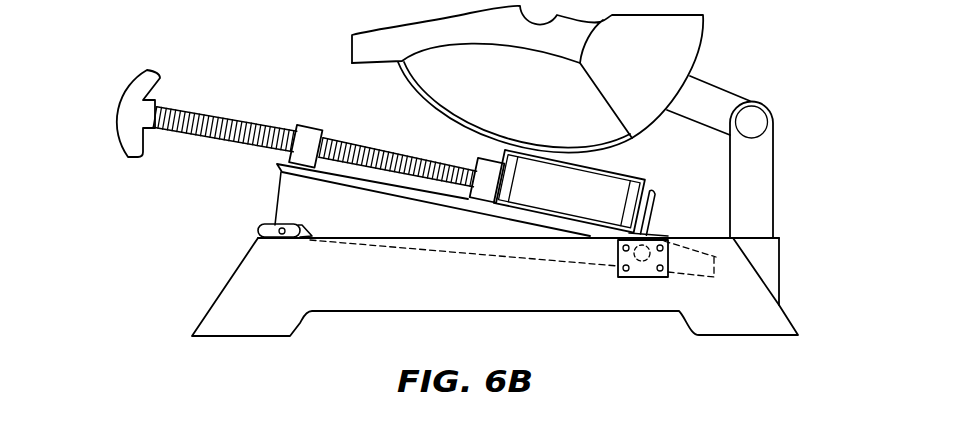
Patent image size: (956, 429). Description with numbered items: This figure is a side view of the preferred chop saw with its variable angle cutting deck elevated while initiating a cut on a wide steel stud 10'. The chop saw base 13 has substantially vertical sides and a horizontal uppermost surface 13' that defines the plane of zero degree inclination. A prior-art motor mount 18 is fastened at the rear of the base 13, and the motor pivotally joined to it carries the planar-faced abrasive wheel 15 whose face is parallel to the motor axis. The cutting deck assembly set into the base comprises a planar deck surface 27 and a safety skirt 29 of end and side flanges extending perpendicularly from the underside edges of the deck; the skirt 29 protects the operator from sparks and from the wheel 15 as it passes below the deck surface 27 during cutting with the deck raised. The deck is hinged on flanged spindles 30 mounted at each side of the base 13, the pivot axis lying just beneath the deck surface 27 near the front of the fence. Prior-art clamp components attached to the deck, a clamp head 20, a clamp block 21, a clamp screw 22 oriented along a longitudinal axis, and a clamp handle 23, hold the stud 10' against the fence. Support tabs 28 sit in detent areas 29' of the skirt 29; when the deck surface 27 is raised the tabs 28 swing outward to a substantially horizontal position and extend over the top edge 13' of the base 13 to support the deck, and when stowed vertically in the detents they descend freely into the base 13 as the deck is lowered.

The wider stud 10' is at (749, 124).
The chop saw base 13 is at (455, 287).
The uppermost surface 13' is at (518, 304).
The wheel 15 is at (453, 79).
The motor mount 18 is at (764, 197).
The clamp head 20 is at (487, 195).
The clamp block 21 is at (295, 124).
The clamp screw 22 is at (187, 111).
The clamp handle 23 is at (117, 112).
The deck surface 27 is at (390, 187).
The support tab 28 is at (256, 228).
The safety skirt 29 is at (372, 197).
The detent area 29' is at (251, 198).
The flanged spindle 30 is at (647, 258).